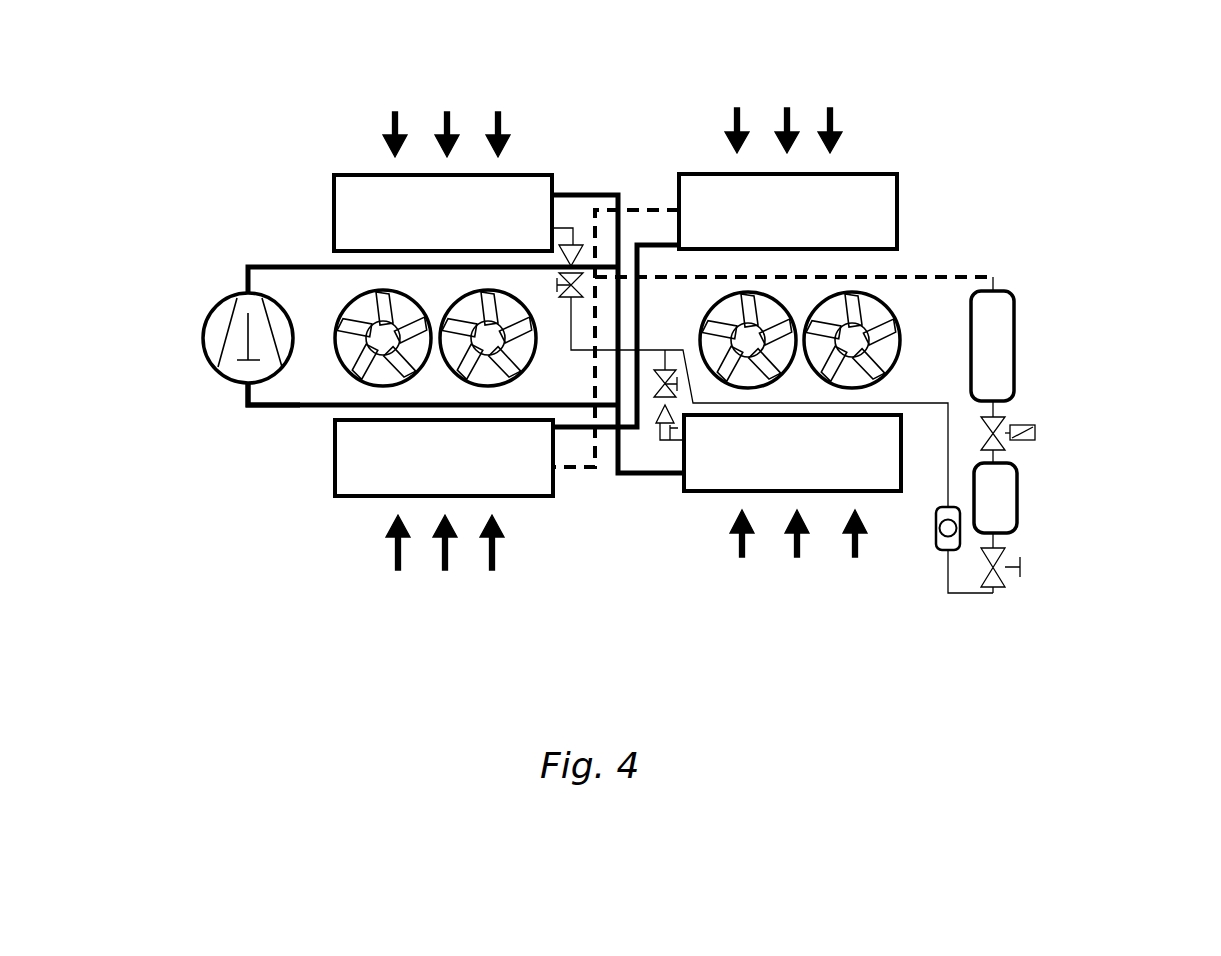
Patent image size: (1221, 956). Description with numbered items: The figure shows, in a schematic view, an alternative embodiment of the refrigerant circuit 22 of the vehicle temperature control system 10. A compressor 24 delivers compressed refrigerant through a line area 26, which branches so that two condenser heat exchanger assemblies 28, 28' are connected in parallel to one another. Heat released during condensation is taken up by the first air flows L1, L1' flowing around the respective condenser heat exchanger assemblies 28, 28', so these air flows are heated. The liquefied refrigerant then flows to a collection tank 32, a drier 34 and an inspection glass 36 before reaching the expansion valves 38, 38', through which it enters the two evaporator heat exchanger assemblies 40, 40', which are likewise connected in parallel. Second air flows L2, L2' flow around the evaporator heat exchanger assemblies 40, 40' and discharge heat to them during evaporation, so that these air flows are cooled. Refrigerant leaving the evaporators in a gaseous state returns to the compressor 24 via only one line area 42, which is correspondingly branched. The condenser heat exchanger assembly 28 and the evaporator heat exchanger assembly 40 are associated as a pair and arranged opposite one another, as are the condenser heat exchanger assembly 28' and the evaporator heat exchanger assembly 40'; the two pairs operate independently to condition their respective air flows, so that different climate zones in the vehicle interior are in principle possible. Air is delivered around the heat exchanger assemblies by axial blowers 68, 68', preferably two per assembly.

The vehicle temperature control system 10 is at (1107, 95).
The refrigerant circuit 22 is at (199, 168).
The compressor 24 is at (208, 316).
The line area 26 is at (289, 266).
The condenser heat exchanger assembly 28 is at (831, 196).
The condenser heat exchanger assembly 28' is at (430, 501).
The collection tank 32 is at (1020, 315).
The drier 34 is at (1018, 496).
The inspection glass 36 is at (938, 547).
The expansion valve 38 is at (633, 465).
The expansion valve 38' is at (773, 343).
The evaporator heat exchanger assembly 40 is at (792, 489).
The evaporator heat exchanger assembly 40' is at (431, 177).
The line area 42 is at (277, 420).
The axial blower 68 is at (857, 304).
The axial blower 68' is at (403, 399).
The first air flow L1 is at (783, 107).
The second air flow L2 is at (798, 565).
The first air flow L1' is at (435, 572).
The second air flow L2' is at (446, 112).